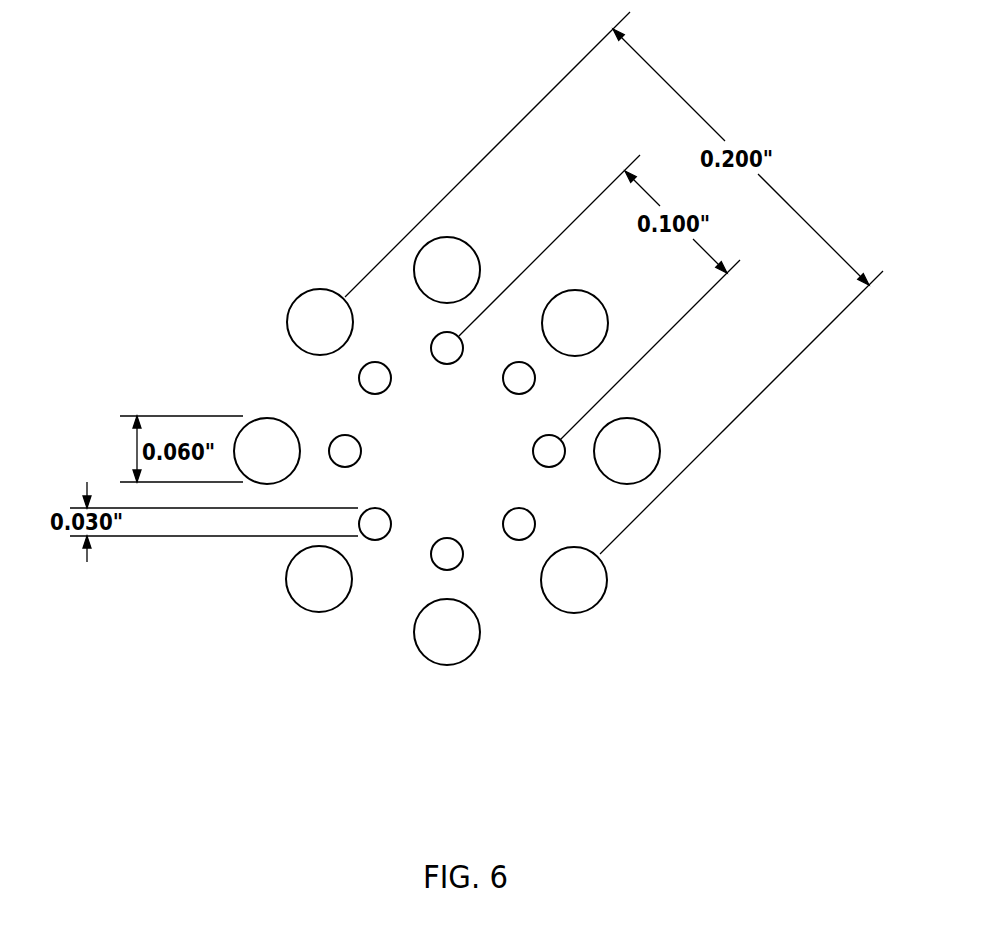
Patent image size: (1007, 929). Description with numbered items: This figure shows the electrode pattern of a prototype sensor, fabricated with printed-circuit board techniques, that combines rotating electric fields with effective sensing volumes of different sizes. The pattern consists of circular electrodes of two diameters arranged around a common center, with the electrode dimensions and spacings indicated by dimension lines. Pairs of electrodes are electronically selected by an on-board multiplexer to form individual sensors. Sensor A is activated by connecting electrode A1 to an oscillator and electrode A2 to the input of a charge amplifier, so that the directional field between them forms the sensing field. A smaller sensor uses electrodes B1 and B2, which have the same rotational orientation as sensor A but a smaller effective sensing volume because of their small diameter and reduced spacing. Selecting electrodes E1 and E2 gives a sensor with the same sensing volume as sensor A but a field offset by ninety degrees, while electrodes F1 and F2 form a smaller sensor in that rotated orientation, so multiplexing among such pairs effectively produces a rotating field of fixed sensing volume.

The electrode A1 is at (298, 295).
The electrode A2 is at (597, 605).
The electrode B1 is at (387, 390).
The electrode B2 is at (507, 513).
The electrode E1 is at (298, 605).
The electrode E2 is at (597, 295).
The electrode F1 is at (387, 512).
The electrode F2 is at (507, 390).